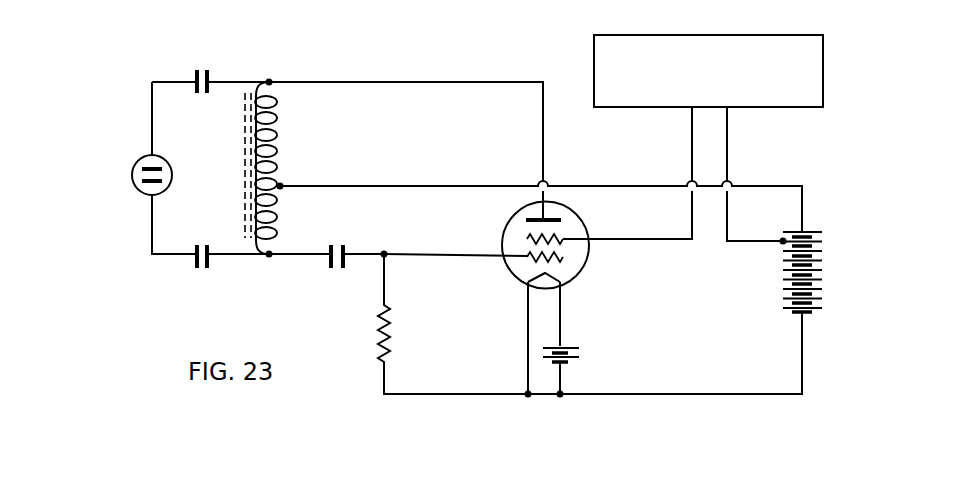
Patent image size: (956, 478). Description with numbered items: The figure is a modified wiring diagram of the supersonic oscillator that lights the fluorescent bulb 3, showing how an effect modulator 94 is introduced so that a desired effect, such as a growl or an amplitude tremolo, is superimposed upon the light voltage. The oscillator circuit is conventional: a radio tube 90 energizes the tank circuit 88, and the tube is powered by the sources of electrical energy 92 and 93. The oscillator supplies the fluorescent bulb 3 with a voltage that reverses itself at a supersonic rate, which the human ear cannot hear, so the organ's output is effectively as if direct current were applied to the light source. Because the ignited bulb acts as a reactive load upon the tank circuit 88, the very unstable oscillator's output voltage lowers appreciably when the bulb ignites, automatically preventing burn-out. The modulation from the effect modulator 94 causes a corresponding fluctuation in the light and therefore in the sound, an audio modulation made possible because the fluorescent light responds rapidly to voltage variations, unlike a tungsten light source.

The fluorescent bulb 3 is at (134, 185).
The tank circuit 88 is at (277, 150).
The radio tube 90 is at (588, 265).
The source of electrical energy 92 is at (576, 357).
The source of electrical energy 93 is at (790, 289).
The effect modulator 94 is at (632, 100).